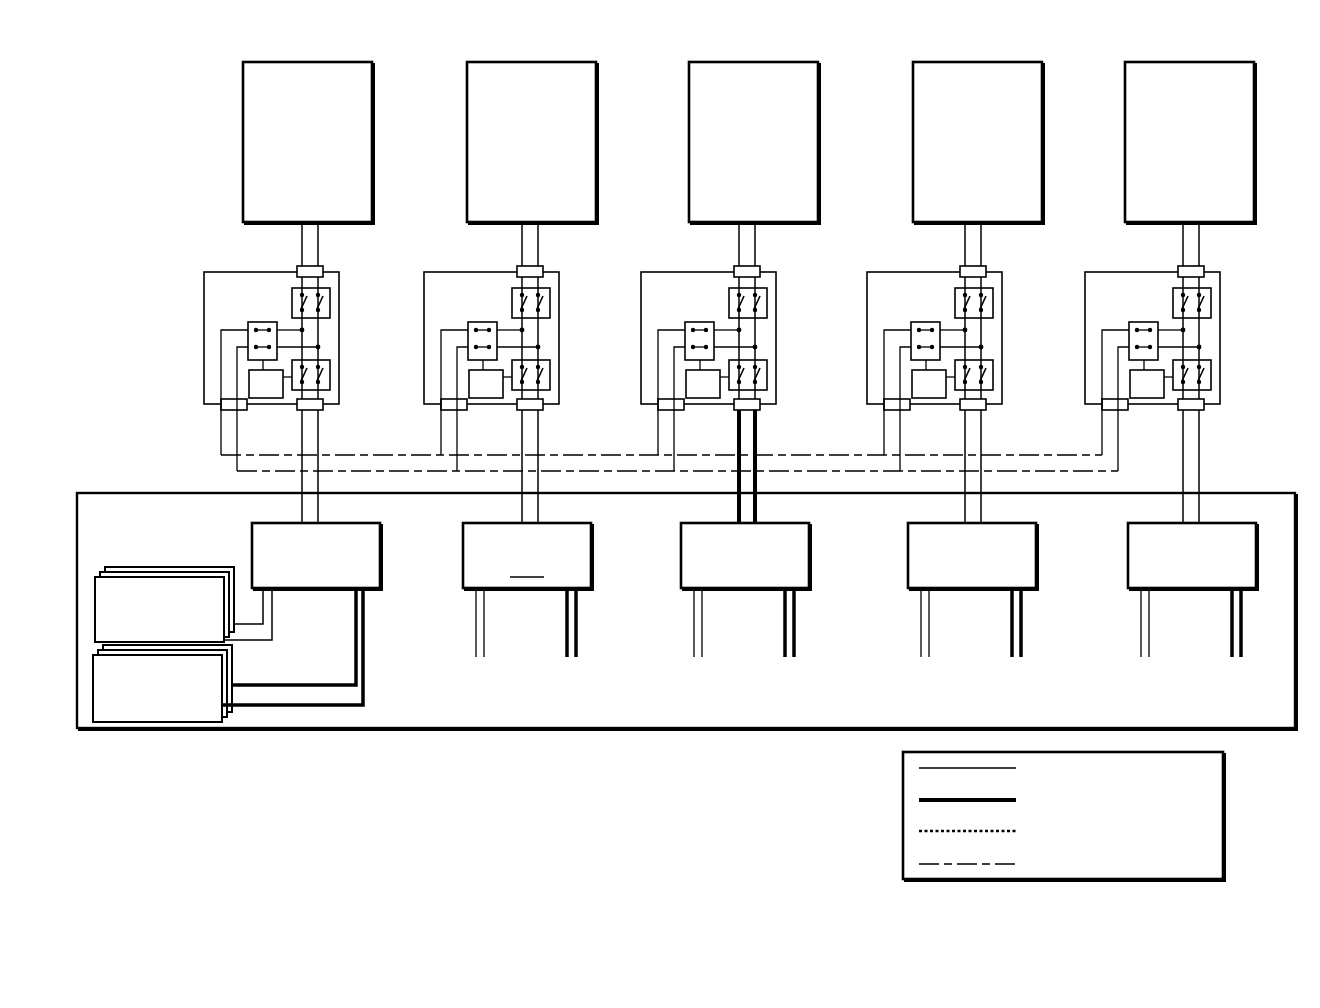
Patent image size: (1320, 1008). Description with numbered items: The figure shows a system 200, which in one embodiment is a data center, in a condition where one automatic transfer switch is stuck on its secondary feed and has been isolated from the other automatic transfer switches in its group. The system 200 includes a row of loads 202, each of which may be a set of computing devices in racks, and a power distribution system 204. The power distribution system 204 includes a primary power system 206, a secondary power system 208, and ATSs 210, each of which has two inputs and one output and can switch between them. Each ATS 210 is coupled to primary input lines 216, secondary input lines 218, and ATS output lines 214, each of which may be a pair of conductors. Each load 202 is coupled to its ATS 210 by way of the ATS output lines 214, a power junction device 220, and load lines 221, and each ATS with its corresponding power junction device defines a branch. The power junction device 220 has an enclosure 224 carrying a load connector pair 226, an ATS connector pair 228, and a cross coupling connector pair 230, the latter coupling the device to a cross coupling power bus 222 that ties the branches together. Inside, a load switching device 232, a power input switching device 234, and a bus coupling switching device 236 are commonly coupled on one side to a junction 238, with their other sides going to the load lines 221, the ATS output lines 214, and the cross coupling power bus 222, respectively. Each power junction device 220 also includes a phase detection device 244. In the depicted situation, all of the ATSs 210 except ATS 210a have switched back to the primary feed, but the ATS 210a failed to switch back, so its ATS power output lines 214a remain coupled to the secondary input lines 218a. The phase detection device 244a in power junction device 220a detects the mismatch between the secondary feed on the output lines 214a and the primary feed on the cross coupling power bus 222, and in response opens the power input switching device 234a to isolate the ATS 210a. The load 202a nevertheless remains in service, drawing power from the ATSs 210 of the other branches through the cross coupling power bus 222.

The system 200 is at (165, 152).
The loads 202 is at (236, 74).
The load 202a is at (830, 126).
The power distribution system 204 is at (120, 519).
The primary power system 206 is at (164, 604).
The secondary power system 208 is at (162, 683).
The ATSs 210 is at (299, 577).
The ATS 210a is at (824, 551).
The ATS output lines 214 is at (320, 457).
The ATS power output lines 214a is at (758, 443).
The primary input lines 216 is at (273, 614).
The secondary input lines 218 is at (365, 641).
The secondary input lines 218a is at (796, 637).
The power junction device 220 is at (245, 296).
The power junction device 220a is at (641, 300).
The load lines 221 is at (319, 252).
The cross coupling power bus 222 is at (590, 455).
The enclosure 224 is at (204, 345).
The load connector pair 226 is at (324, 272).
The ATS connector pair 228 is at (324, 406).
The cross coupling connector pair 230 is at (215, 410).
The load switching device 232 is at (331, 303).
The power input switching device 234 is at (331, 375).
The power input switching device 234a is at (769, 379).
The bus coupling switching device 236 is at (248, 332).
The junction 238 is at (331, 334).
The phase detection device 244 is at (265, 399).
The phase detection device 244a is at (697, 399).